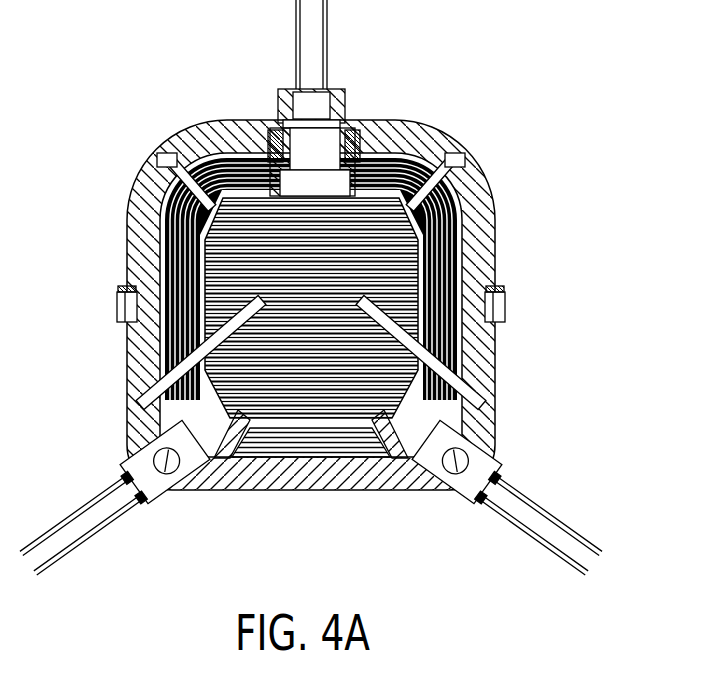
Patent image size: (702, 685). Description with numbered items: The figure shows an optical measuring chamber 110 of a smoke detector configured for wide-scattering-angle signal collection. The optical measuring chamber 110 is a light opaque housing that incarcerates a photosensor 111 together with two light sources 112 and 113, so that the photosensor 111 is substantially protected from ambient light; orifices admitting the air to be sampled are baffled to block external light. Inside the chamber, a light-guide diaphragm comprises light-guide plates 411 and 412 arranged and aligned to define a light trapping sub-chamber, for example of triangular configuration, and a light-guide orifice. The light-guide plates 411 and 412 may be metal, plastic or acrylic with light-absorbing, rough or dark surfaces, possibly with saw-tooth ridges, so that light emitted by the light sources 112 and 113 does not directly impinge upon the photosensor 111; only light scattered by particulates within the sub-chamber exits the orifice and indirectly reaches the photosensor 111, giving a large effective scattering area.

The optical measuring chamber 110 is at (490, 228).
The photosensor 111 is at (318, 147).
The light source 112 is at (176, 482).
The light source 113 is at (462, 496).
The light-guide plate 411 is at (160, 372).
The light-guide plate 412 is at (467, 388).